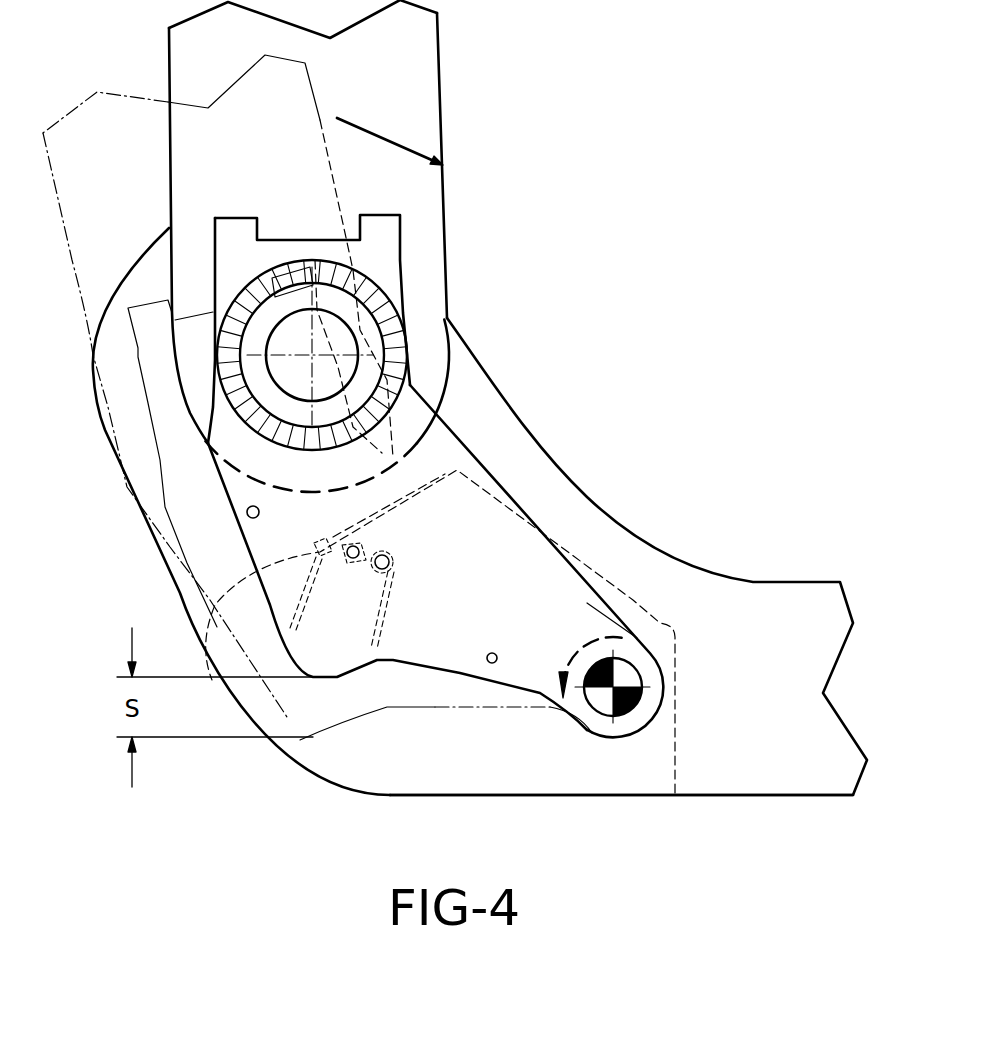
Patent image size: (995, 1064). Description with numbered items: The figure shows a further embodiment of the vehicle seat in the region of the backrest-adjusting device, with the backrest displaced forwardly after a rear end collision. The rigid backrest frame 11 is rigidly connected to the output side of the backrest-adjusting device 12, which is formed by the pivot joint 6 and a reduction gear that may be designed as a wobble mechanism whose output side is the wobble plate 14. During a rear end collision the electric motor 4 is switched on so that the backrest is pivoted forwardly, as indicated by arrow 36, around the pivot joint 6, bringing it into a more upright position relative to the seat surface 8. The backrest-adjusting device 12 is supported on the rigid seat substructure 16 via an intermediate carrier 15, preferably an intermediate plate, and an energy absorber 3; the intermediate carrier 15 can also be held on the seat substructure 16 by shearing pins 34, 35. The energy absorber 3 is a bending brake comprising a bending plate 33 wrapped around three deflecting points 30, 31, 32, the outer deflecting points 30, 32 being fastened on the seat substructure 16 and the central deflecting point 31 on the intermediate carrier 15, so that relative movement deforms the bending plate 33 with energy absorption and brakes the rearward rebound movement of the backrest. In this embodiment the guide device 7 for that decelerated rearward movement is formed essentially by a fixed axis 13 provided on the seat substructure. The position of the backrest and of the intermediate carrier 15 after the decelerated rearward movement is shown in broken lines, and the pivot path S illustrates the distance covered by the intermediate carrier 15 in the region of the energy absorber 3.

The energy absorber 3 is at (333, 642).
The electric motor 4 is at (378, 282).
The pivot joint 6 is at (312, 355).
The guide device 7 is at (431, 765).
The seat surface 8 is at (795, 580).
The rigid backrest frame 11 is at (440, 42).
The backrest-adjusting device 12 is at (436, 353).
The fixed axis 13 is at (613, 687).
The wobble plate 14 is at (380, 252).
The intermediate carrier 15 is at (438, 458).
The seat substructure 16 is at (440, 631).
The outer deflecting point 30 is at (389, 566).
The central deflecting point 31 is at (359, 545).
The outer deflecting point 32 is at (327, 550).
The bending plate 33 is at (382, 613).
The shearing pin 34 is at (249, 516).
The shearing pin 35 is at (497, 653).
The arrow 36 is at (393, 137).